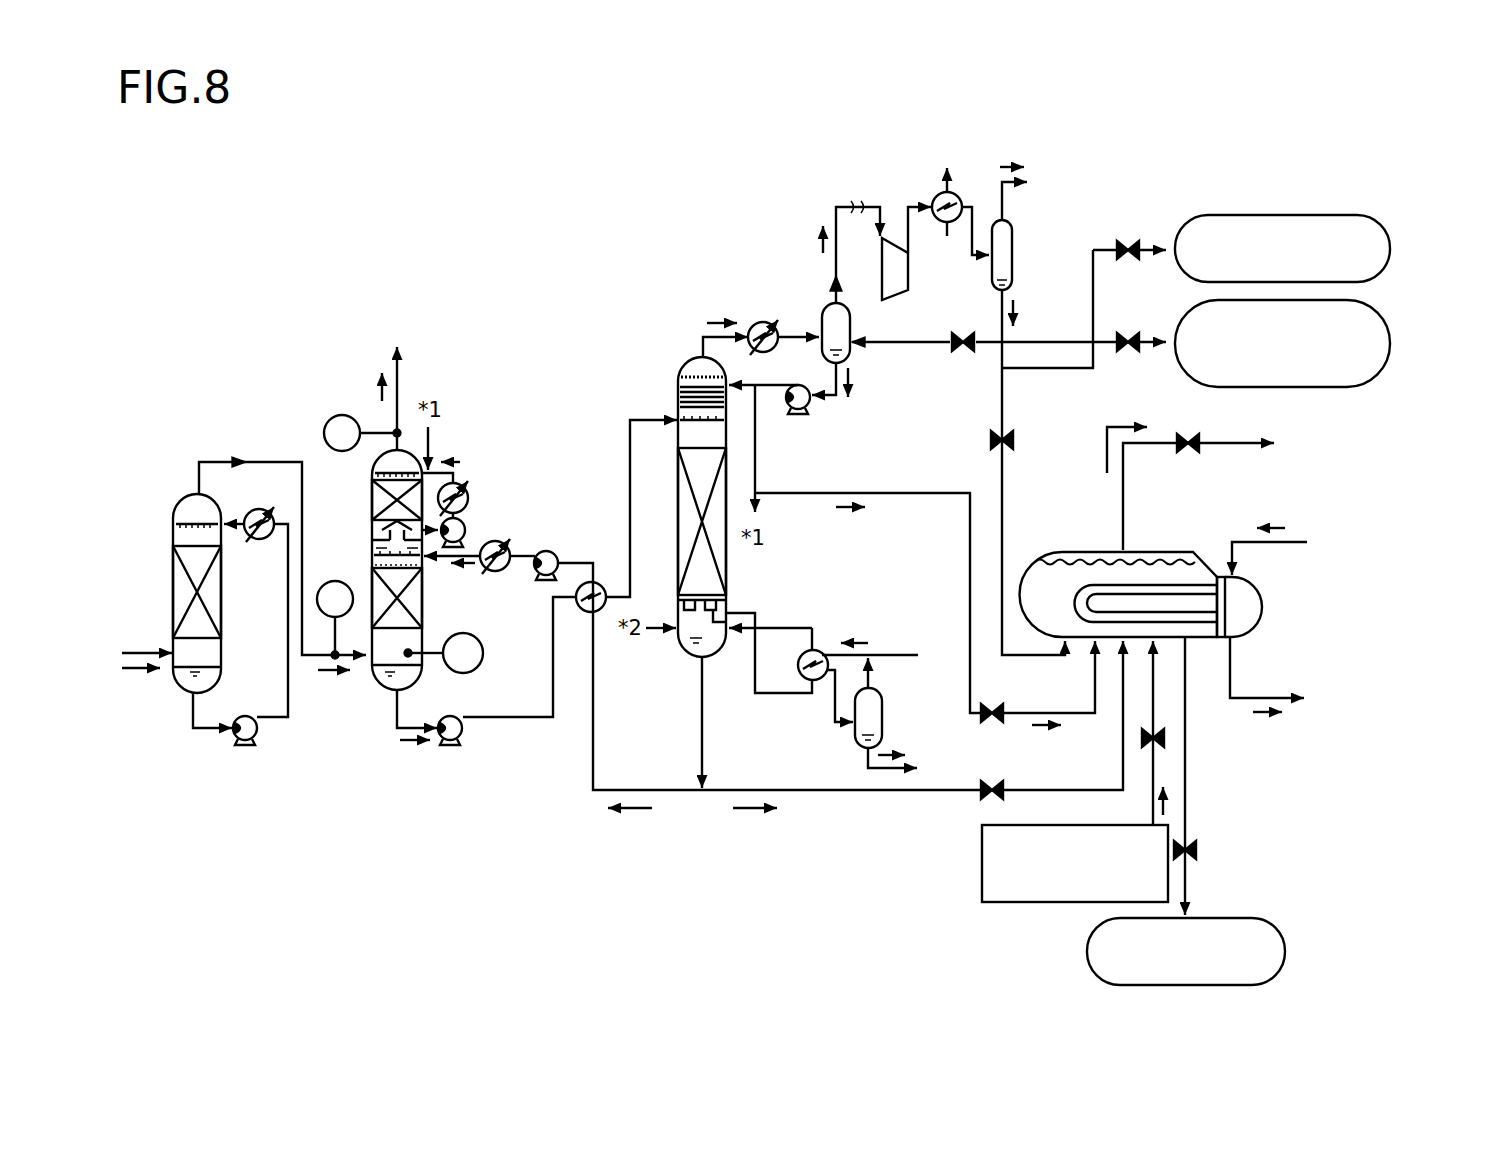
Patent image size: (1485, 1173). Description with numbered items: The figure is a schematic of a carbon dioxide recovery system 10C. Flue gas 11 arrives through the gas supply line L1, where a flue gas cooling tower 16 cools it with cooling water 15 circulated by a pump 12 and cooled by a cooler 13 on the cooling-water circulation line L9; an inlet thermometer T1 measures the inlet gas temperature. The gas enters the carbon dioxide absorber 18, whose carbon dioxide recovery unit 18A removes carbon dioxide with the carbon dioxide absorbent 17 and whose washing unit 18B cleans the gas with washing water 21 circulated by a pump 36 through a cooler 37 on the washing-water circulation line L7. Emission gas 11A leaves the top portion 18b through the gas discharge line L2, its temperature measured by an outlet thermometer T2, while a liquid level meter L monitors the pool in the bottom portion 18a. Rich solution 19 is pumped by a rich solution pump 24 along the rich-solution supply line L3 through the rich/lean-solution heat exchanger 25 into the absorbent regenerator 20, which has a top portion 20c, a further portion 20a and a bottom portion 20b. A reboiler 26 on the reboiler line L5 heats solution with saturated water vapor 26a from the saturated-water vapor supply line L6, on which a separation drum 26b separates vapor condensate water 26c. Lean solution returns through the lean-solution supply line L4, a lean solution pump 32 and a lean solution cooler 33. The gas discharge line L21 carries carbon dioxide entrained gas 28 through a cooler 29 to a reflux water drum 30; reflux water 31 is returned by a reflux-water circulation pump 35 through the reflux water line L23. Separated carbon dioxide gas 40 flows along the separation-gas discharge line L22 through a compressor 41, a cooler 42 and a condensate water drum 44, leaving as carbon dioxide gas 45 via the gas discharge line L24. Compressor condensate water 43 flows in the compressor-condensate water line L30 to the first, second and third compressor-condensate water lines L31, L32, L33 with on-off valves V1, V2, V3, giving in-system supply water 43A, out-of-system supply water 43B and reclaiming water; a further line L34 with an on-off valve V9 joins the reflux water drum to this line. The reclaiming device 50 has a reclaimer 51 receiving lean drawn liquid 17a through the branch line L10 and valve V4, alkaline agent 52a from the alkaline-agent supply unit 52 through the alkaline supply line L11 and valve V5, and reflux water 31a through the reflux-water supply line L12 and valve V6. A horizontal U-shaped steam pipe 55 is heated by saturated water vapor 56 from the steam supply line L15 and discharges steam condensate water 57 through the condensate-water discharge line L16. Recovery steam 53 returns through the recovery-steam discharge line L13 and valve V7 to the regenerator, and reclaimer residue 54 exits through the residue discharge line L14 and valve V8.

The carbon dioxide recovery system 10C is at (722, 130).
The flue gas 11 is at (133, 690).
The emission gas 11A is at (378, 385).
The pump 12 is at (243, 716).
The cooler 13 is at (262, 541).
The cooling water 15 is at (250, 540).
The flue gas cooling tower 16 is at (178, 500).
The carbon dioxide absorbent 17 is at (456, 570).
The lean drawn liquid 17a is at (752, 816).
The carbon dioxide absorber 18 is at (406, 440).
The bottom portion of absorber 18a is at (383, 698).
The top portion of absorber 18b is at (372, 466).
The carbon dioxide recovery unit 18A is at (374, 598).
The washing unit 18B is at (376, 500).
The rich solution 19 is at (414, 750).
The absorbent regenerator 20 is at (686, 340).
The regenerator top section 20a is at (678, 410).
The bottom portion of regenerator 20b is at (684, 652).
The top portion of regenerator 20c is at (678, 364).
The washing water 21 is at (449, 468).
The rich solution pump 24 is at (460, 742).
The rich/lean-solution heat exchanger 25 is at (585, 612).
The reboiler 26 is at (813, 648).
The saturated water vapor 26a is at (848, 640).
The separation drum 26b is at (884, 700).
The vapor condensate water 26c is at (892, 752).
The carbon dioxide entrained gas 28 is at (717, 321).
The cooler 29 is at (765, 321).
The reflux water drum 30 is at (855, 325).
The reflux water 31 is at (855, 380).
The reflux water 31a is at (850, 515).
The lean solution pump 32 is at (553, 550).
The lean solution cooler 33 is at (502, 572).
The reflux-water circulation pump 35 is at (815, 408).
The pump 36 is at (466, 524).
The cooler 37 is at (465, 488).
The carbon dioxide gas 40 is at (820, 240).
The compressor 41 is at (912, 273).
The cooler 42 is at (936, 197).
The compressor condensate water 43 is at (1020, 305).
The in-system supply water 43A is at (1393, 343).
The out-of-system supply water 43B is at (1393, 250).
The condensate water drum 44 is at (1015, 238).
The carbon dioxide gas 45 is at (1008, 164).
The reclaiming device 50 is at (1167, 537).
The reclaimer 51 is at (1083, 552).
The alkaline-agent supply unit 52 is at (1020, 904).
The alkaline agent 52a is at (1172, 806).
The recovery steam 53 is at (1110, 420).
The reclaimer residue 54 is at (1290, 950).
The steam pipe 55 is at (1200, 622).
The saturated water vapor 56 is at (1290, 527).
The steam condensate water 57 is at (1290, 714).
The gas supply line L1 is at (289, 460).
The gas discharge line L2 is at (392, 357).
The rich-solution supply line L3 is at (622, 458).
The lean-solution supply line L4 is at (690, 794).
The reboiler line L5 is at (755, 610).
The saturated-water vapor supply line L6 is at (905, 652).
The washing-water circulation line L7 is at (462, 458).
The cooling-water circulation line L9 is at (270, 730).
The branch line L10 is at (852, 795).
The alkaline supply line L11 is at (1160, 776).
The reflux-water supply line L12 is at (1030, 710).
The recovery-steam discharge line L13 is at (1245, 442).
The residue discharge line L14 is at (1192, 886).
The steam supply line L15 is at (1236, 540).
The condensate-water discharge line L16 is at (1240, 670).
The gas discharge line L21 is at (700, 336).
The separation-gas discharge line L22 is at (838, 205).
The reflux water line L23 is at (763, 392).
The gas discharge line L24 is at (1030, 185).
The compressor-condensate water line L30 is at (998, 320).
The first compressor-condensate water line L31 is at (1160, 338).
The second compressor-condensate water line L32 is at (1160, 246).
The third compressor-condensate water line L33 is at (1008, 392).
The separation drum water line L34 is at (940, 352).
The first on-off valve V1 is at (1128, 332).
The second on-off valve V2 is at (1128, 240).
The third on-off valve V3 is at (990, 442).
The fourth on-off valve V4 is at (985, 800).
The fifth on-off valve V5 is at (1165, 740).
The sixth on-off valve V6 is at (992, 725).
The seventh on-off valve V7 is at (1188, 433).
The eighth on-off valve V8 is at (1197, 850).
The valve V9 is at (968, 352).
The inlet thermometer T1 is at (335, 620).
The outlet thermometer T2 is at (362, 433).
The liquid level meter L is at (443, 653).